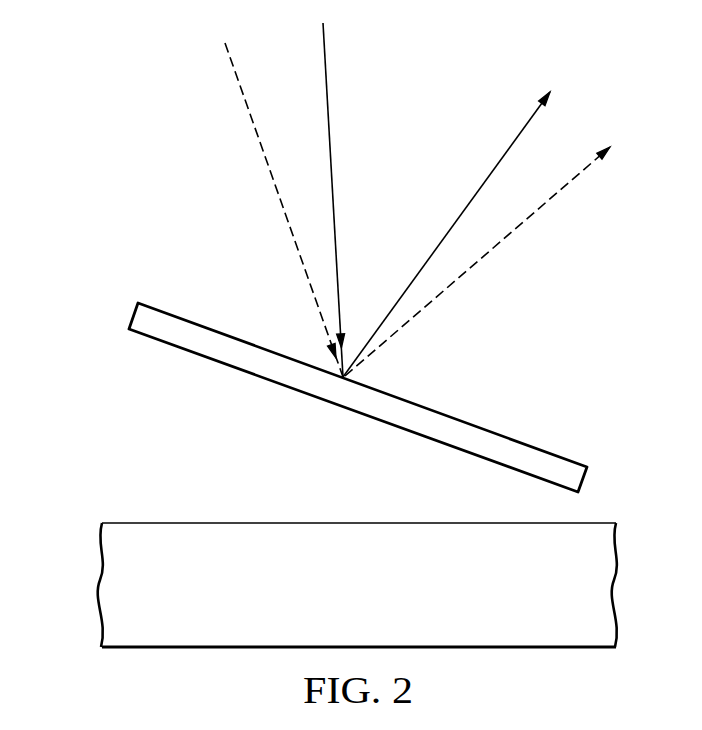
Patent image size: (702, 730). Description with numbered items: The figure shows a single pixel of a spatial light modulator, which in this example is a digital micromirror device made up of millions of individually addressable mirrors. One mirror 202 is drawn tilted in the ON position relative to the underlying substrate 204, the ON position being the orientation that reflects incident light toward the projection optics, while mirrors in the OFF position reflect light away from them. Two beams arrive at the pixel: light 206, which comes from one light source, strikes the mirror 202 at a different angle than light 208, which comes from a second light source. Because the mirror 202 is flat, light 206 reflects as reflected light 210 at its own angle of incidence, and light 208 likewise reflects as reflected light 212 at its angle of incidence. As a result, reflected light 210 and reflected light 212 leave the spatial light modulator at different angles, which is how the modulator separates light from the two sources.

The mirror 202 is at (132, 315).
The substrate 204 is at (102, 588).
The light 206 is at (333, 160).
The light 208 is at (270, 173).
The reflected light 210 is at (497, 163).
The reflected light 212 is at (485, 252).